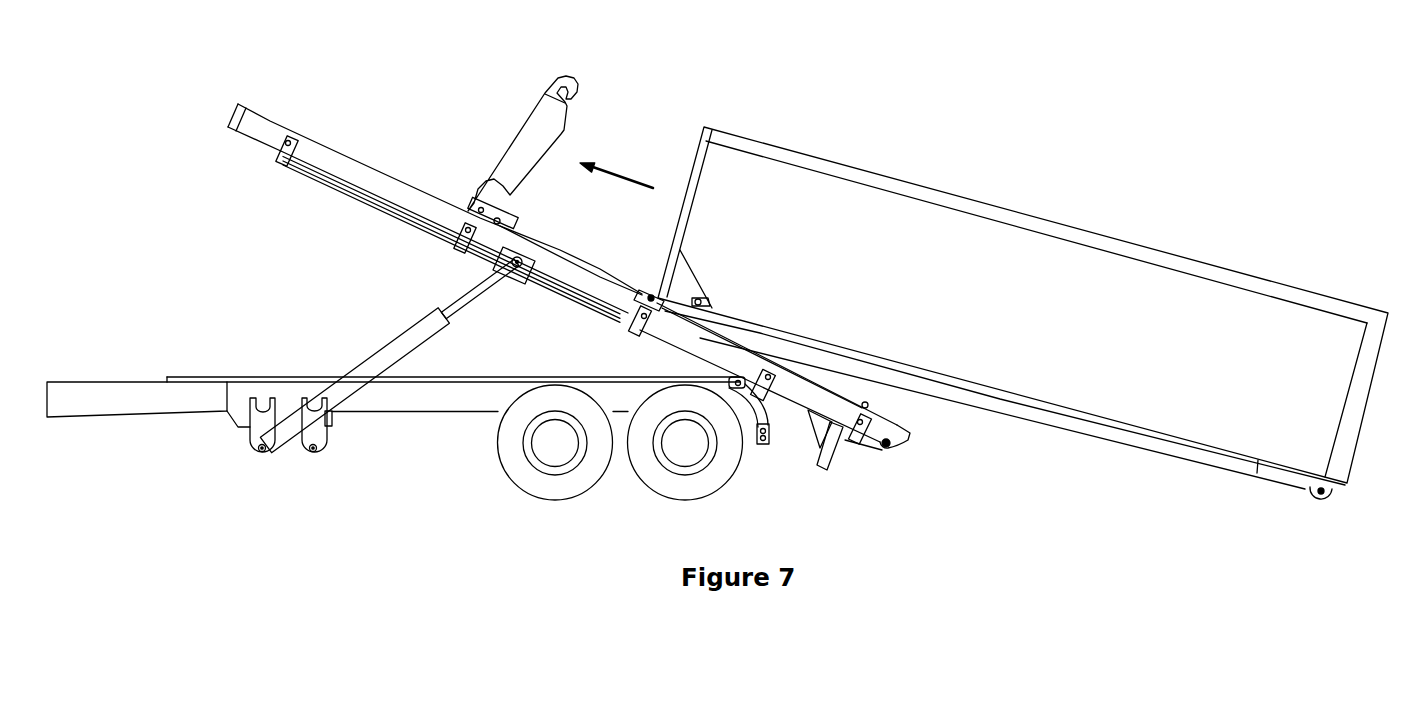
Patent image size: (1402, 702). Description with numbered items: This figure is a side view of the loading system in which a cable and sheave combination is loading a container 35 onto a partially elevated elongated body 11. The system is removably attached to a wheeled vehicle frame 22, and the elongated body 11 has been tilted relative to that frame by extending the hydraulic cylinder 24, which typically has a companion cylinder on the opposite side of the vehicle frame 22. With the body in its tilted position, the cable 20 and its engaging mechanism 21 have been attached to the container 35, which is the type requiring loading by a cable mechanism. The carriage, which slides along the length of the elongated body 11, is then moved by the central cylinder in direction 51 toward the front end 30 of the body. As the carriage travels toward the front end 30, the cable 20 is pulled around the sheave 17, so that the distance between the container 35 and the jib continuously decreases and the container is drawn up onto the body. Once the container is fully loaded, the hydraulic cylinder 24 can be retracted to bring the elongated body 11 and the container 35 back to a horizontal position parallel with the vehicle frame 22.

The elongated body 11 is at (362, 177).
The sheave 17 is at (507, 212).
The cable 20 is at (590, 250).
The engaging mechanism 21 is at (708, 287).
The wheeled vehicle frame 22 is at (123, 407).
The hydraulic cylinder 24 is at (365, 365).
The front end 30 is at (50, 355).
The container 35 is at (885, 273).
The direction (of carriage movement toward the front end) 51 is at (616, 165).